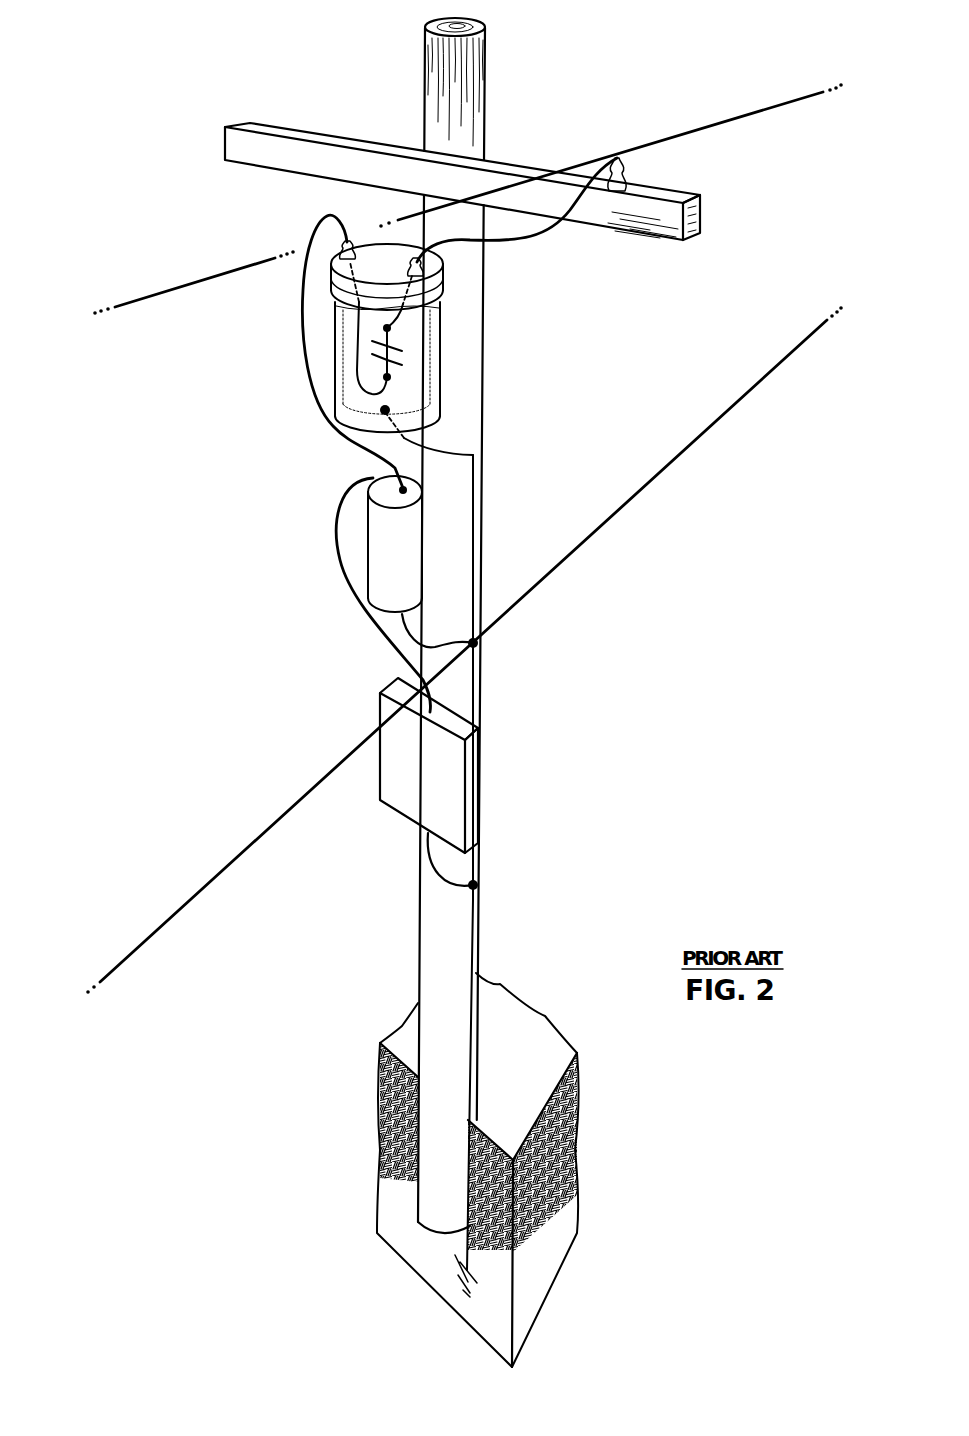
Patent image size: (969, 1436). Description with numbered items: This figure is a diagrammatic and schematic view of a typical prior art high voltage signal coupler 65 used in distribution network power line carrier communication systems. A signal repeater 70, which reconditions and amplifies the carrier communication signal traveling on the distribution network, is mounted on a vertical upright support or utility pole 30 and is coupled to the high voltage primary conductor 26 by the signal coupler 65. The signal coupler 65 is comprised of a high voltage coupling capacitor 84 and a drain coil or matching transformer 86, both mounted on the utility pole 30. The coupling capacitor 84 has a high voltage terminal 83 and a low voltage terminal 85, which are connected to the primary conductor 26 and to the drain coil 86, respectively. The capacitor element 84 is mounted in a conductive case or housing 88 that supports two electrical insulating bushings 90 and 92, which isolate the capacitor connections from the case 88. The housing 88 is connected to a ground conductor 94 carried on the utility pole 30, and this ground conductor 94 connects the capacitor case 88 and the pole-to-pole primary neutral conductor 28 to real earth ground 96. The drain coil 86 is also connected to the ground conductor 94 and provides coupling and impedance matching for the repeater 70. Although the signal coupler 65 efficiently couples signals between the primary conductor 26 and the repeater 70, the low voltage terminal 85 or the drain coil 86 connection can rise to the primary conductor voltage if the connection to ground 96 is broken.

The primary conductor 26 is at (156, 294).
The primary neutral conductor 28 is at (128, 952).
The utility pole 30 is at (419, 926).
The signal coupler 65 is at (639, 778).
The signal repeater 70 is at (437, 780).
The high voltage terminal 83 is at (391, 329).
The high voltage coupling capacitor 84 is at (394, 357).
The low voltage terminal 85 is at (391, 377).
The drain coil 86 is at (367, 543).
The conductive case 88 is at (331, 412).
The insulating bushing 90 is at (486, 275).
The insulating bushing 92 is at (350, 241).
The ground conductor 94 is at (466, 698).
The earth ground 96 is at (470, 1273).